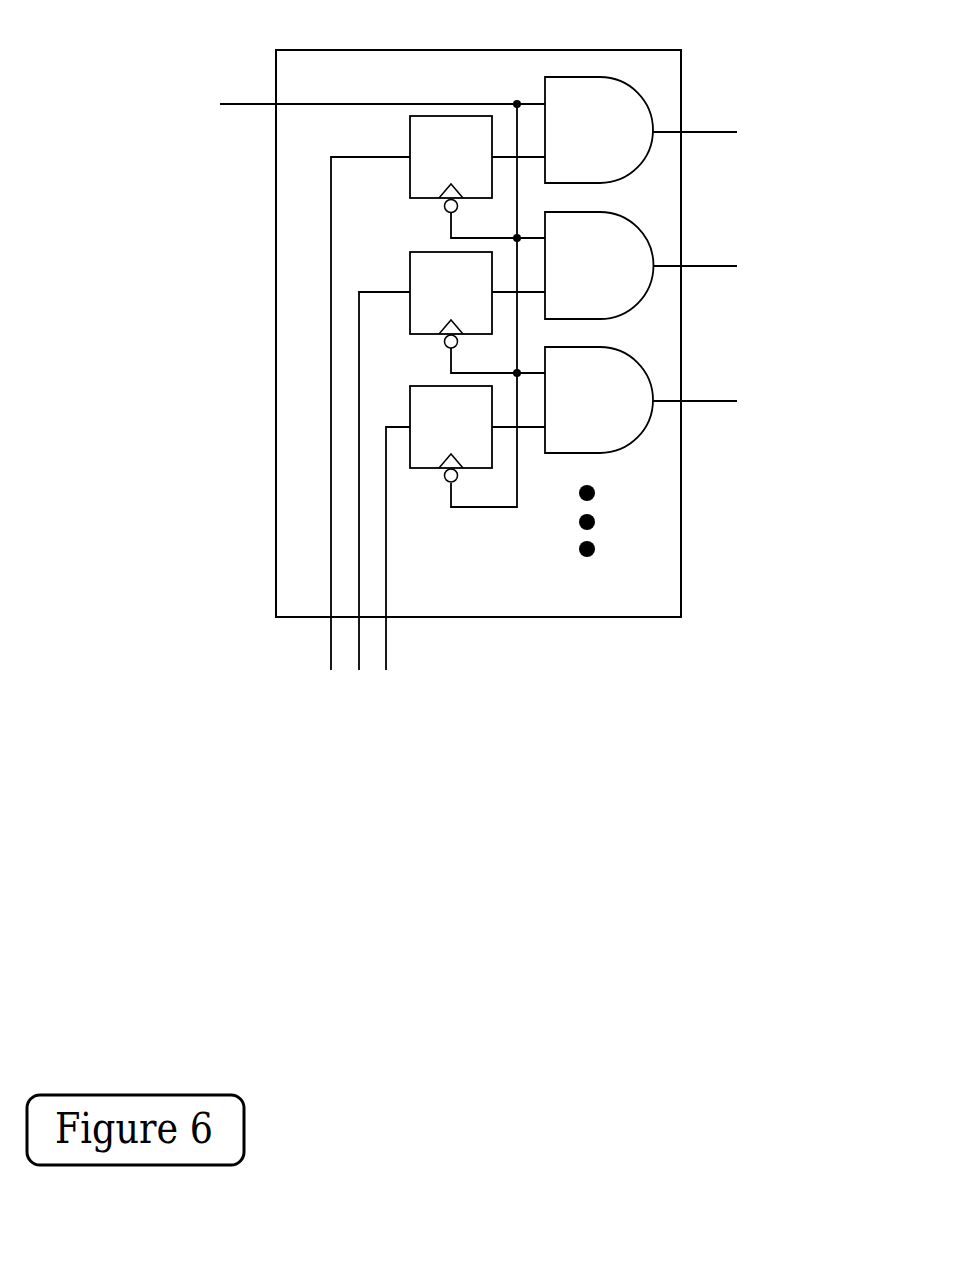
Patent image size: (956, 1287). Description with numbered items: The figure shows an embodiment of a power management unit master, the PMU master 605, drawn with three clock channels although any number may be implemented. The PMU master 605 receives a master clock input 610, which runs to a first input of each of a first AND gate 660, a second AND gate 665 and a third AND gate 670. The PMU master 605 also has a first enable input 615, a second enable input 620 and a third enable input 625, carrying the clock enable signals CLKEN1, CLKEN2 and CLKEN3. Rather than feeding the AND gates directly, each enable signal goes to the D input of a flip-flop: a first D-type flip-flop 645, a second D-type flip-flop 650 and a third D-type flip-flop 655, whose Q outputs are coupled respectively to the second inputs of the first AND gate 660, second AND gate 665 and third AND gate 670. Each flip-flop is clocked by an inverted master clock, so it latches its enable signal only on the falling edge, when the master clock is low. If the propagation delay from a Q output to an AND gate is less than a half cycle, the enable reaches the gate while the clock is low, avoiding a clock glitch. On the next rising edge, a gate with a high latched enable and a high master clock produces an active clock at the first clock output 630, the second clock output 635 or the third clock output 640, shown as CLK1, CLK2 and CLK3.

The PMU master 605 is at (478, 308).
The master clock input 610 is at (316, 301).
The first enable input 615 is at (344, 451).
The second enable input 620 is at (374, 536).
The third enable input 625 is at (411, 586).
The first clock output 630 is at (743, 135).
The second clock output 635 is at (745, 265).
The third clock output 640 is at (743, 400).
The first D-type flip-flop 645 is at (477, 164).
The second D-type flip-flop 650 is at (477, 300).
The third D-type flip-flop 655 is at (477, 434).
The first AND gate 660 is at (599, 130).
The second AND gate 665 is at (599, 265).
The third AND gate 670 is at (599, 400).